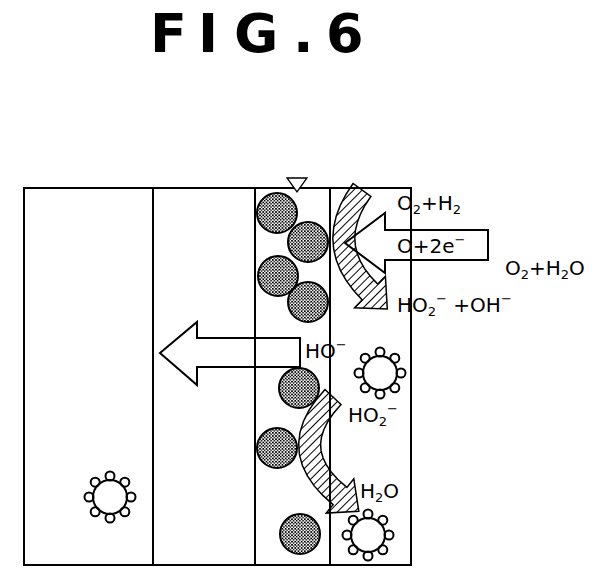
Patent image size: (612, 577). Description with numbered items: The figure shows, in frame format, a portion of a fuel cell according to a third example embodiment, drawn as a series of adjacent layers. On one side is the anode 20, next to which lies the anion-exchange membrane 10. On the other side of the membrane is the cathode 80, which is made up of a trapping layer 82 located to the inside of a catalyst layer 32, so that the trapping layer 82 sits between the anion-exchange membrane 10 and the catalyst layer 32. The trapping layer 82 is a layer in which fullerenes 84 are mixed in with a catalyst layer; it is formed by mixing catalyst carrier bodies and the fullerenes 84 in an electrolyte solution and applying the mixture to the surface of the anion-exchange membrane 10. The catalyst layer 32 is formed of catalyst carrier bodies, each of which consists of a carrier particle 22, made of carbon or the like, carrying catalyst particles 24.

The anode 20 is at (101, 195).
The anion-exchange membrane 10 is at (200, 195).
The cathode 80 is at (413, 133).
The trapping layer 82 is at (270, 195).
The catalyst layer 32 is at (380, 195).
The fullerenes 84 is at (322, 307).
The catalyst particles 24 is at (387, 520).
The carrier particle 22 is at (368, 535).